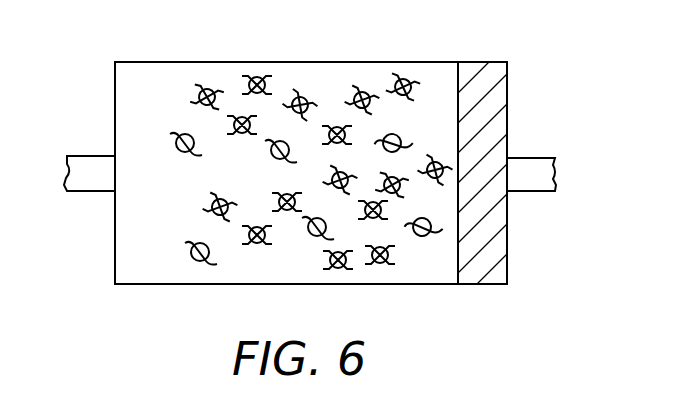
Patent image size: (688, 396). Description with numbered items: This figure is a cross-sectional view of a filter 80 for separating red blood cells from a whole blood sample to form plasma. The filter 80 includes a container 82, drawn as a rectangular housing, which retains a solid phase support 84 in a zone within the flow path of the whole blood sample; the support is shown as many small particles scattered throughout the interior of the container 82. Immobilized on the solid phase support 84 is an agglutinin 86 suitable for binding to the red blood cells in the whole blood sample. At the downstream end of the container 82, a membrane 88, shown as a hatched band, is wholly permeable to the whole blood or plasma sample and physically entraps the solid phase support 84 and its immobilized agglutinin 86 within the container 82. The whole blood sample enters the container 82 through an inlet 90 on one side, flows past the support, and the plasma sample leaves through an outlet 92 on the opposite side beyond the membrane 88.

The filter 80 is at (310, 164).
The container 82 is at (162, 62).
The solid phase support 84 is at (197, 263).
The agglutinin 86 is at (393, 262).
The membrane 88 is at (487, 220).
The inlet 90 is at (90, 168).
The outlet 92 is at (532, 167).